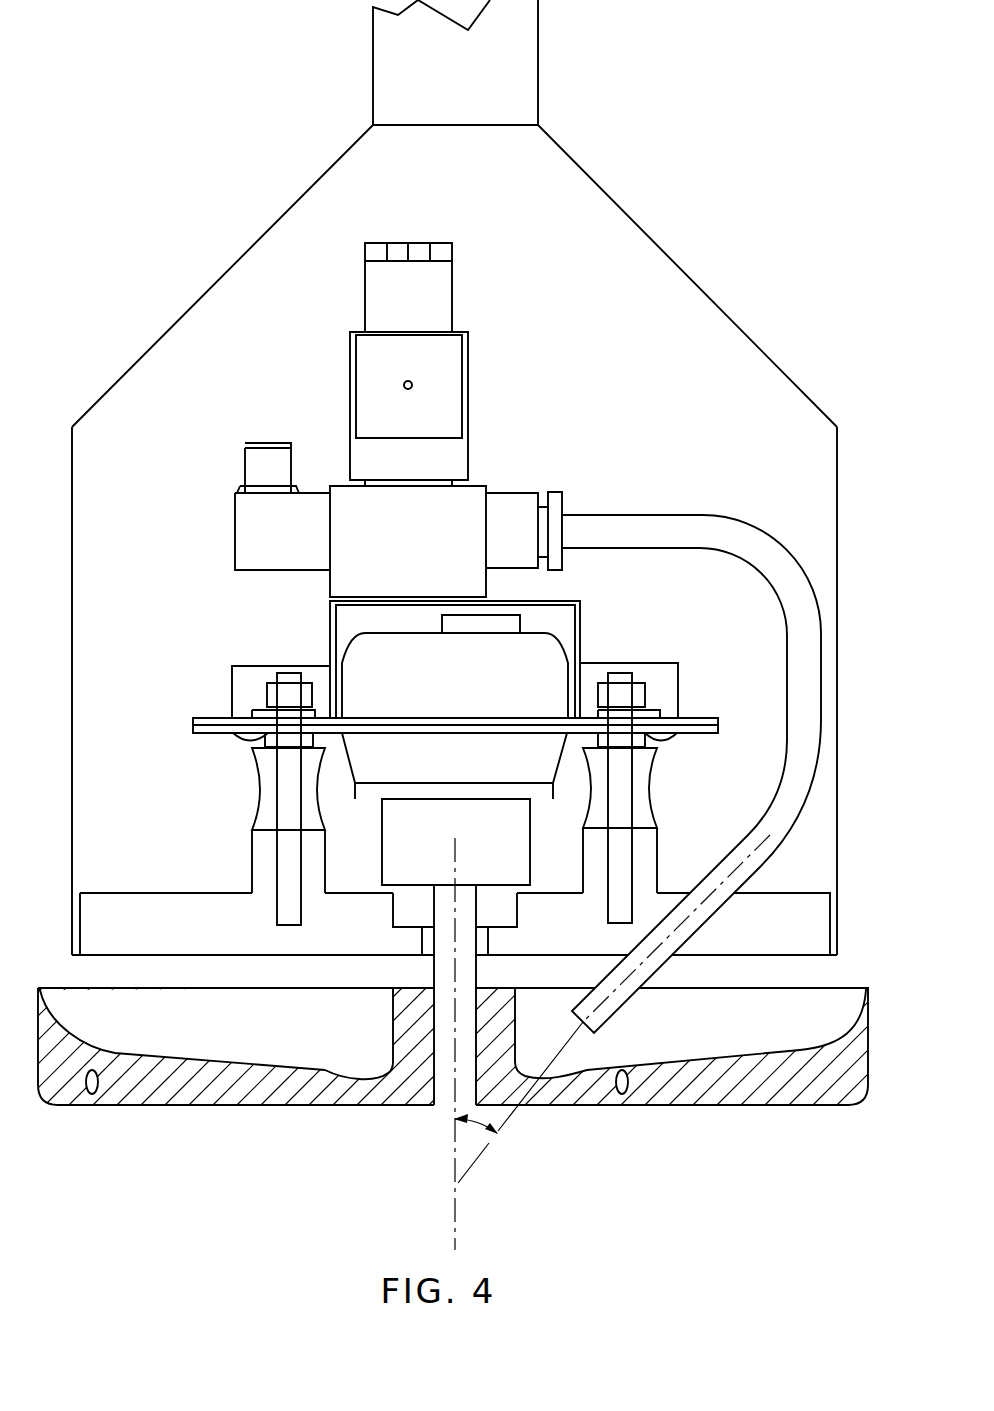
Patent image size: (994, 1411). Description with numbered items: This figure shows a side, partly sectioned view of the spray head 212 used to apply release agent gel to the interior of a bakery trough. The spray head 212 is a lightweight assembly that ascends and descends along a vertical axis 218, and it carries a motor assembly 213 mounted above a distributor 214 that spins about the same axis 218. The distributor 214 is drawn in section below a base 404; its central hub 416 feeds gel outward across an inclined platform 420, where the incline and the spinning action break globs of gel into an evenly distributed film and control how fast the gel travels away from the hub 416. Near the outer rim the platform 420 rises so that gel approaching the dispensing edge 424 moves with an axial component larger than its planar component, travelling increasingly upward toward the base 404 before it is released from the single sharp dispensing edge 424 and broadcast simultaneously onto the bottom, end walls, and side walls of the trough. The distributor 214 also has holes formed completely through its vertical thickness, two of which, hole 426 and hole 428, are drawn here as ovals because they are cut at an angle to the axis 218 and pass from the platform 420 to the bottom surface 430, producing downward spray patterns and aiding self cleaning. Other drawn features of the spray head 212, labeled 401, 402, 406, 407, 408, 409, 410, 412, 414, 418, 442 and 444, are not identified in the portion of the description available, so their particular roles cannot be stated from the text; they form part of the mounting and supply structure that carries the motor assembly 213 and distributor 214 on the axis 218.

The spray head 212 is at (678, 130).
The motor assembly 213 is at (723, 307).
The distributor 214 is at (870, 1015).
The vertical axis 218 is at (454, 1170).
The neck 401 is at (372, 86).
The housing shroud 402 is at (663, 253).
The base 404 is at (107, 892).
The vibration isolators 406 is at (262, 800).
The mounting block 407 is at (393, 905).
The frame 408 is at (232, 688).
The tube 409 is at (476, 900).
The bracket 410 is at (580, 625).
The valve block 412 is at (503, 492).
The flexible tube 414 is at (712, 515).
The hub 416 is at (393, 1022).
The recess corner 418 is at (358, 1072).
The platform 420 is at (178, 1057).
The dispensing edge 424 is at (40, 990).
The hole 426 is at (82, 1092).
The hole 428 is at (605, 1093).
The bottom surface 430 is at (763, 1103).
The tube axis 442 is at (508, 1113).
The angle 444 is at (468, 1125).